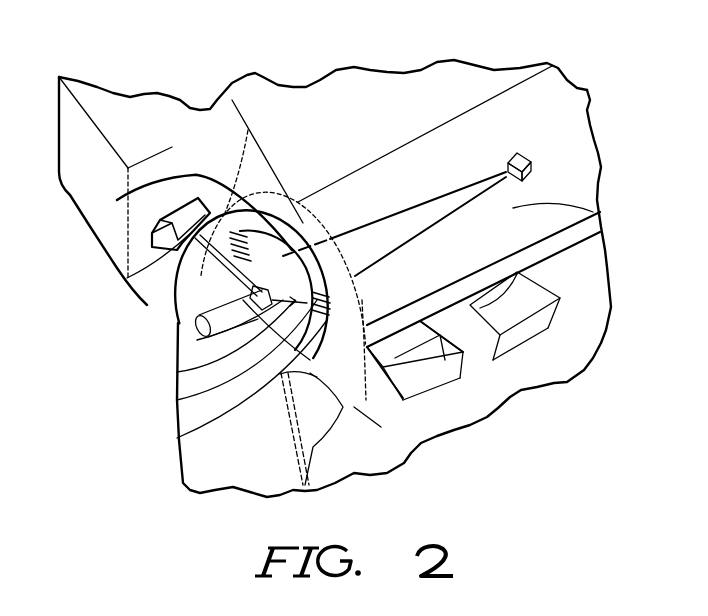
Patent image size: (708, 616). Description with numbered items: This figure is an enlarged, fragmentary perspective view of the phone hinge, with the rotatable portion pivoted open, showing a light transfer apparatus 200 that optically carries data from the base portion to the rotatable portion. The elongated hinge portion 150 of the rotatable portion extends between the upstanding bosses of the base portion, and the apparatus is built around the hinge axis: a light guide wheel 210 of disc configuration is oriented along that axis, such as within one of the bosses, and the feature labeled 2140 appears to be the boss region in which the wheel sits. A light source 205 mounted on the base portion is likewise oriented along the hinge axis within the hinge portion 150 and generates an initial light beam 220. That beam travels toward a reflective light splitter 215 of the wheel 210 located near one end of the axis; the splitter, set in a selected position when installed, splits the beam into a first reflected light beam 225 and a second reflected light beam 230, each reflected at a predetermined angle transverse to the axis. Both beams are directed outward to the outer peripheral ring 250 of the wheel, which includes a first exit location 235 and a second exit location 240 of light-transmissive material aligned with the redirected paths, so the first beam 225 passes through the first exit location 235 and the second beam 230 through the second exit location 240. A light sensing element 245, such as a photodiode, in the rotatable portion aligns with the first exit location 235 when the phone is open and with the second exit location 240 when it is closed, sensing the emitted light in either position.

The hinge portion 150 is at (551, 110).
The light transfer apparatus 200 is at (593, 210).
The light source 205 is at (534, 148).
The light guide wheel 210 is at (281, 226).
The bore 2140 is at (302, 222).
The reflective light splitter 215 is at (180, 368).
The initial light beam 220 is at (417, 222).
The first reflected light beam 225 is at (178, 298).
The second reflected light beam 230 is at (180, 397).
The first exit location 235 is at (180, 316).
The second exit location 240 is at (180, 432).
The light sensing element 245 is at (132, 266).
The outer peripheral ring 250 is at (172, 171).